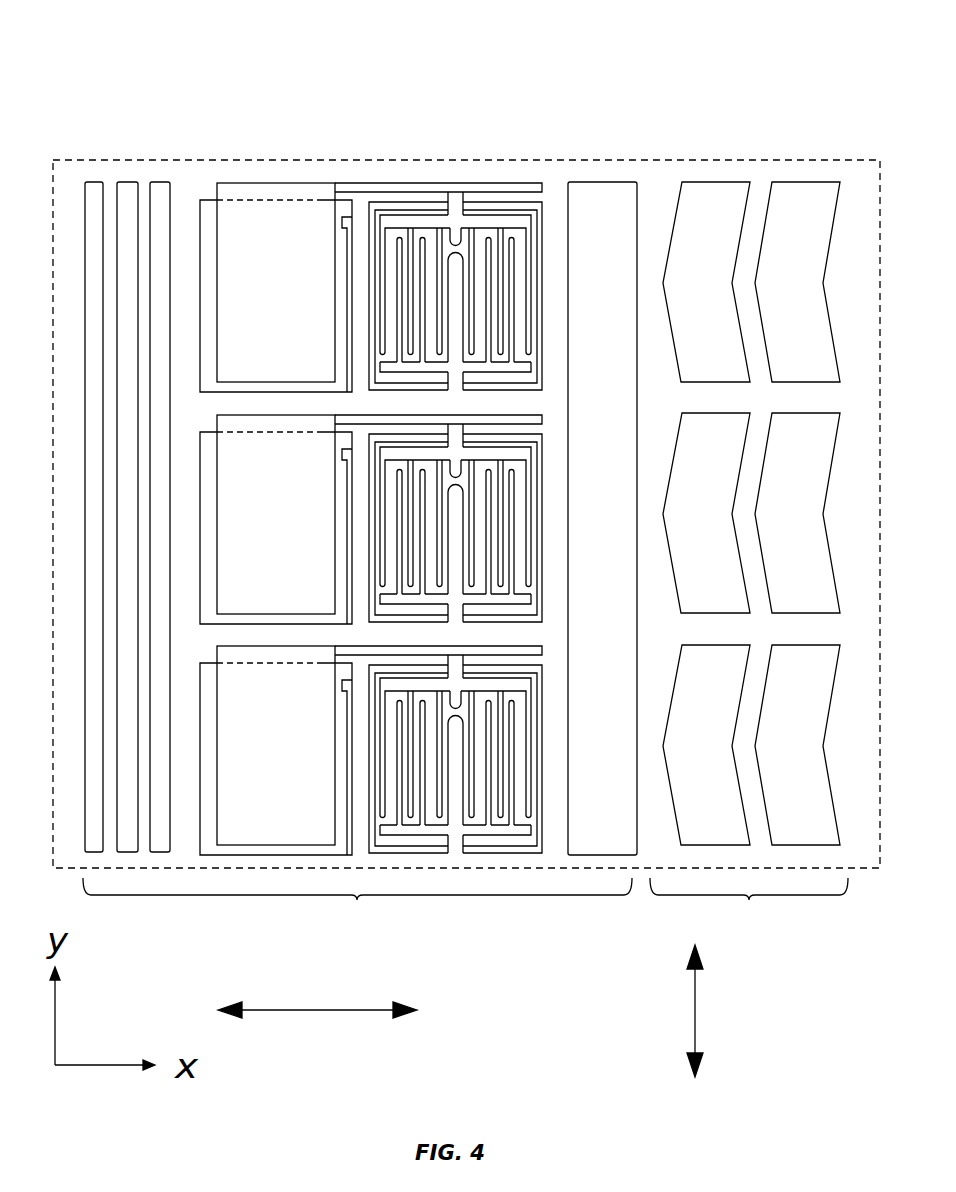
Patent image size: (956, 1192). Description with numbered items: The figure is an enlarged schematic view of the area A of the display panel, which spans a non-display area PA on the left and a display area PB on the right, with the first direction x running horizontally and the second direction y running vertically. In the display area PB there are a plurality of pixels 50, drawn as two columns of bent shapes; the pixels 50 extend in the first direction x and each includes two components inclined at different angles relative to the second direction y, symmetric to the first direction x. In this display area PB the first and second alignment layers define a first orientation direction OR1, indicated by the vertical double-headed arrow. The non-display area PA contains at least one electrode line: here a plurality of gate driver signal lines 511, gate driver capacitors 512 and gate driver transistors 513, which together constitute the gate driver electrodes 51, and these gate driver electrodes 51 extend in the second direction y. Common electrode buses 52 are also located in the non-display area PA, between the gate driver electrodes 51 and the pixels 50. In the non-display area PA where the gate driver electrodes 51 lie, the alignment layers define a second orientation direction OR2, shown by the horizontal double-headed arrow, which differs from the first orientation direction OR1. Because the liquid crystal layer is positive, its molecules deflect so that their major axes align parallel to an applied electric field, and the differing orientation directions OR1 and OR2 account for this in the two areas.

The enlarged area A is at (118, 62).
The gate driver electrodes 51 is at (408, 87).
The gate driver signal lines 511 is at (125, 196).
The gate driver capacitors 512 is at (258, 200).
The gate driver transistors 513 is at (427, 206).
The common electrode buses 52 is at (599, 200).
The pixels 50 is at (722, 200).
The non-display area PA is at (357, 914).
The display area PB is at (749, 914).
The first orientation direction OR1 is at (695, 1010).
The second orientation direction OR2 is at (322, 1008).